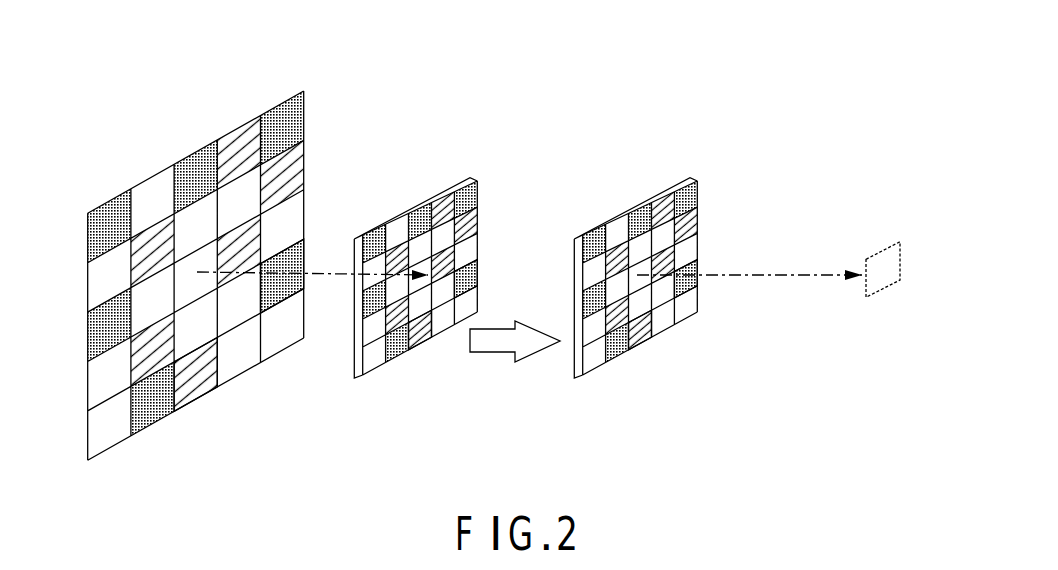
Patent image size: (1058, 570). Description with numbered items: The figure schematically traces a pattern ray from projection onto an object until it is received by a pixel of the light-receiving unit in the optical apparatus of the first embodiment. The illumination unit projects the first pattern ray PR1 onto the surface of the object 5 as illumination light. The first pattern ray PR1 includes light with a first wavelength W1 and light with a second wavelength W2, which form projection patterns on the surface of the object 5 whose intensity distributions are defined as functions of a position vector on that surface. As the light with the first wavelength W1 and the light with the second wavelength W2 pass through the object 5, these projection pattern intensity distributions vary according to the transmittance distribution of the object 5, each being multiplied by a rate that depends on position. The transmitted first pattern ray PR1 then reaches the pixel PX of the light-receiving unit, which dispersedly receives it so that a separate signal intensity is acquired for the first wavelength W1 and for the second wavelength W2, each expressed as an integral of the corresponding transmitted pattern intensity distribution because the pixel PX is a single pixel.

The first pattern ray PR1 is at (292, 80).
The object 5 is at (451, 179).
The first wavelength W1 is at (197, 384).
The second wavelength W2 is at (283, 288).
The pixel PX is at (887, 289).